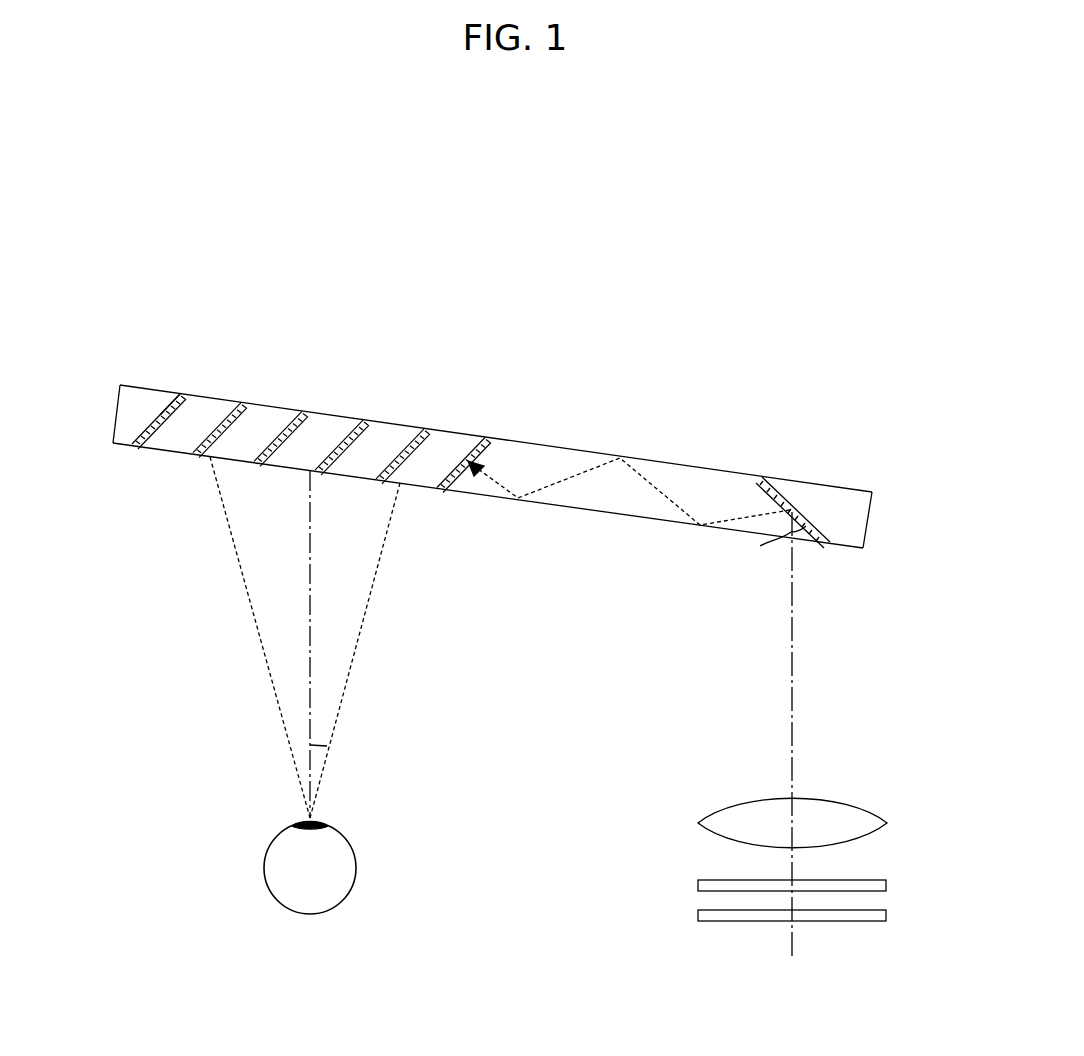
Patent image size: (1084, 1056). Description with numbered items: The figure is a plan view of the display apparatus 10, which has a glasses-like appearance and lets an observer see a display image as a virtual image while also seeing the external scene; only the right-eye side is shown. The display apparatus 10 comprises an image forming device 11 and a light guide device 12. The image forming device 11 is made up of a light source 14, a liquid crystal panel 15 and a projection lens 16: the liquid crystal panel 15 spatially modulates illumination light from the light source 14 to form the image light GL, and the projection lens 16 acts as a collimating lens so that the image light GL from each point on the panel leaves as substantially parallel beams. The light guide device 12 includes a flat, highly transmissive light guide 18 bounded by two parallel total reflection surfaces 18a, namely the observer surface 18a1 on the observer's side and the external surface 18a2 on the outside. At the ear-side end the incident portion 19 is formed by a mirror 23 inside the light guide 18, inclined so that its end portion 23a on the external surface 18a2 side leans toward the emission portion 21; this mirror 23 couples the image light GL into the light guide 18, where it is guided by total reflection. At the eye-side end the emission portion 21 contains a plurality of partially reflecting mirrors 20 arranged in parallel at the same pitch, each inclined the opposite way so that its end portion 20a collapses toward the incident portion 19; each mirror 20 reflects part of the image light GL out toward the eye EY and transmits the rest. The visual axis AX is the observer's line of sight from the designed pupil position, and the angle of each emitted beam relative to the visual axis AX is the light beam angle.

The display apparatus 10 is at (520, 238).
The image forming device 11 is at (620, 806).
The light guide device 12 is at (612, 398).
The light source 14 is at (700, 915).
The liquid crystal panel 15 is at (700, 885).
The projection lens 16 is at (702, 825).
The light guide 18 is at (665, 478).
The total reflection surfaces 18a is at (492, 467).
The observer surface 18a1 is at (475, 498).
The external surface 18a2 is at (510, 440).
The incident portion 19 is at (799, 448).
The mirrors 20 is at (174, 395).
The end portion of the mirror 20a is at (172, 406).
The emission portion 21 is at (347, 358).
The mirror 23 is at (808, 517).
The end portion of the mirror 23a is at (765, 480).
The visual axis AX is at (312, 651).
The image light GL is at (790, 650).
The eye EY is at (278, 838).